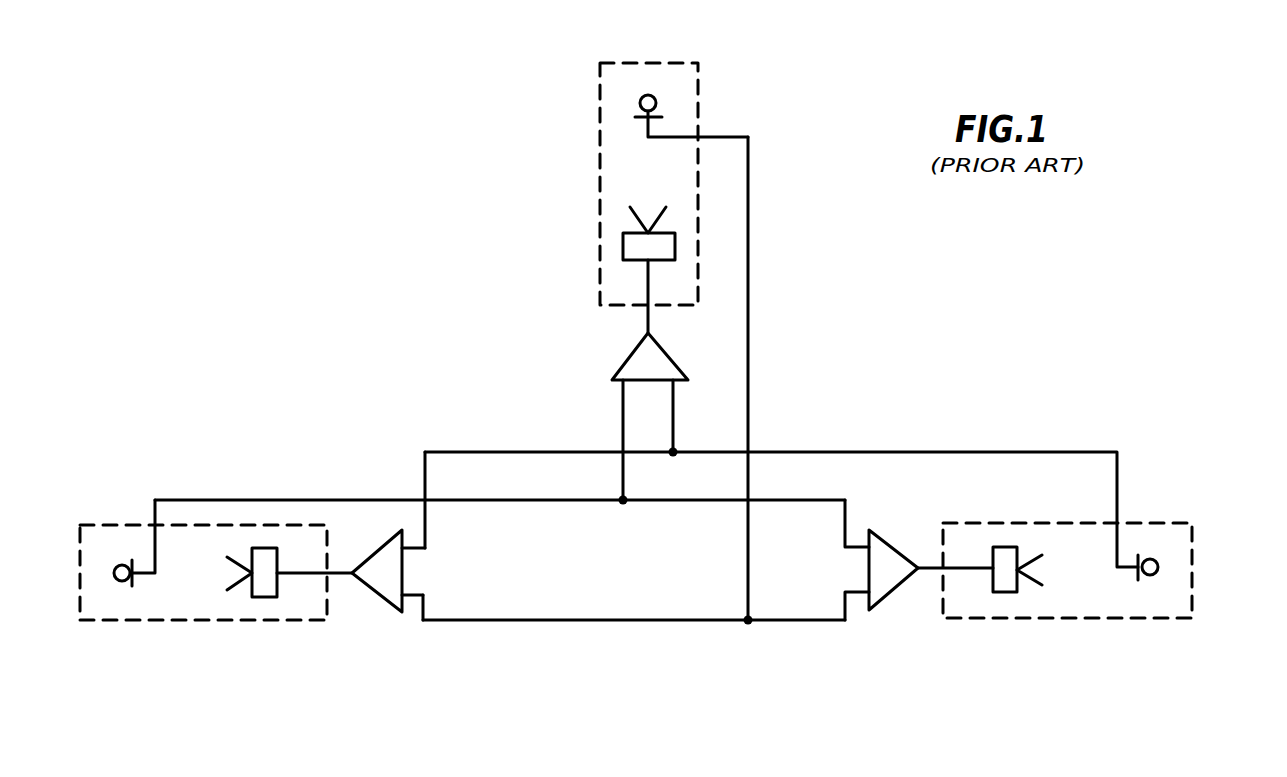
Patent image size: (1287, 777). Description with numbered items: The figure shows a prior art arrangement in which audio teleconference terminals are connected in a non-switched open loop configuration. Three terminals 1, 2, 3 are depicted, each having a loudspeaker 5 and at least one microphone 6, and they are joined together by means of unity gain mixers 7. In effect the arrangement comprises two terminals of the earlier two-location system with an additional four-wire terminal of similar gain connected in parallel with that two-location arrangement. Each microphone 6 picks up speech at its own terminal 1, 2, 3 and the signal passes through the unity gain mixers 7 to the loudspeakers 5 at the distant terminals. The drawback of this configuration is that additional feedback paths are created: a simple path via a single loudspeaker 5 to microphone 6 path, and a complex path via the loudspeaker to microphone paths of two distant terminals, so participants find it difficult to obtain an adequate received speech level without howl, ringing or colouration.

The terminal 1 is at (110, 525).
The terminal 2 is at (698, 92).
The terminal 3 is at (1143, 523).
The loudspeaker 5 is at (632, 243).
The microphone 6 is at (640, 103).
The unity gain mixer 7 is at (632, 372).